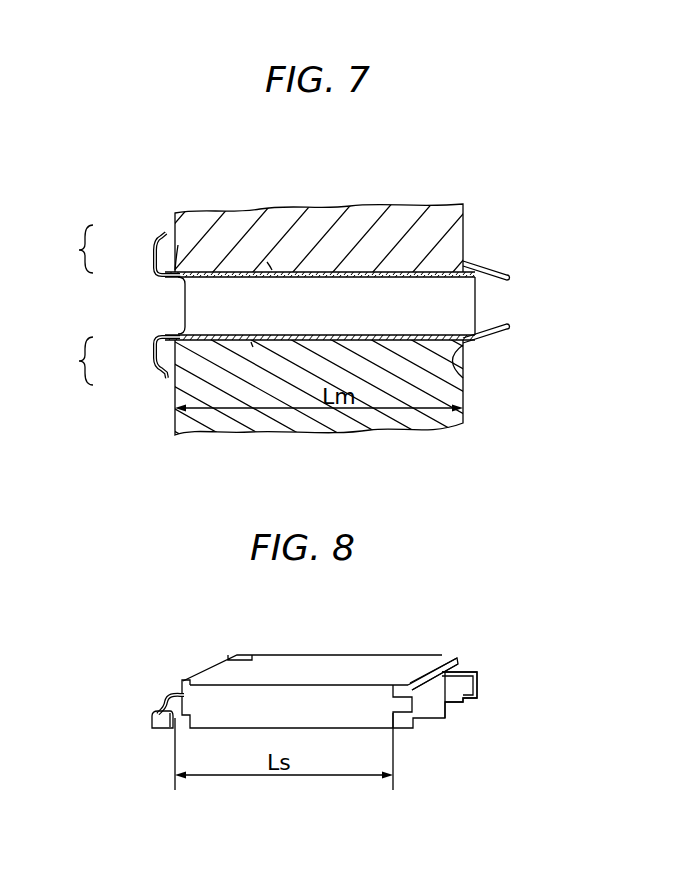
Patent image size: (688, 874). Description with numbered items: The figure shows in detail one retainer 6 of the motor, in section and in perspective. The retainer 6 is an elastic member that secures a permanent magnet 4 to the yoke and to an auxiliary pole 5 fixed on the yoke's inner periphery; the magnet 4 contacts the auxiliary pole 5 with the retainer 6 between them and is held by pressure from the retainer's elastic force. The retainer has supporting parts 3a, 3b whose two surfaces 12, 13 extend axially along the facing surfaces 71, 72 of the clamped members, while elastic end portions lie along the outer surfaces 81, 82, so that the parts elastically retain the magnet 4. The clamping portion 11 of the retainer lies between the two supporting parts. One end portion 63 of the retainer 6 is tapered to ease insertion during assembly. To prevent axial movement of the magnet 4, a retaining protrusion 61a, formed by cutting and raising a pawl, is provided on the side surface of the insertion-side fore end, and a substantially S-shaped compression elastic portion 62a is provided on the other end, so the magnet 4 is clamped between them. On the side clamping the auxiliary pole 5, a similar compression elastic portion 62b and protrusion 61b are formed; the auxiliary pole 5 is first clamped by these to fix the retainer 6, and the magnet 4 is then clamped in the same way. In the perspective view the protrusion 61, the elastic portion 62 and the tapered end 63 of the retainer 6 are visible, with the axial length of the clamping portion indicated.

In FIG. 7, the supporting part 3a is at (68, 361).
In FIG. 7, the supporting part 3b is at (68, 249).
In FIG. 7, the permanent magnet 4 is at (292, 425).
In FIG. 7, the auxiliary pole 5 is at (226, 230).
In FIG. 7, the retainer 6 is at (332, 300).
In FIG. 8, the retainer 6 is at (291, 682).
In FIG. 7, the gap between plates 11 is at (450, 305).
In FIG. 7, the surface 12 is at (322, 333).
In FIG. 7, the surface 13 is at (298, 278).
In FIG. 8, the engaging portion of frame 61 is at (402, 706).
In FIG. 7, the retaining protrusion 61a is at (470, 350).
In FIG. 7, the protrusion 61b is at (466, 260).
In FIG. 8, the hook portion of frame 62 is at (156, 728).
In FIG. 7, the compression elastic portion 62a is at (160, 366).
In FIG. 7, the compression elastic portion 62b is at (160, 240).
In FIG. 7, the end portion 63 is at (500, 271).
In FIG. 8, the end portion 63 is at (434, 706).
In FIG. 7, the facing surface 71 is at (268, 262).
In FIG. 7, the facing surface 72 is at (251, 342).
In FIG. 7, the outer surface 81 is at (178, 245).
In FIG. 7, the outer surface 82 is at (180, 377).